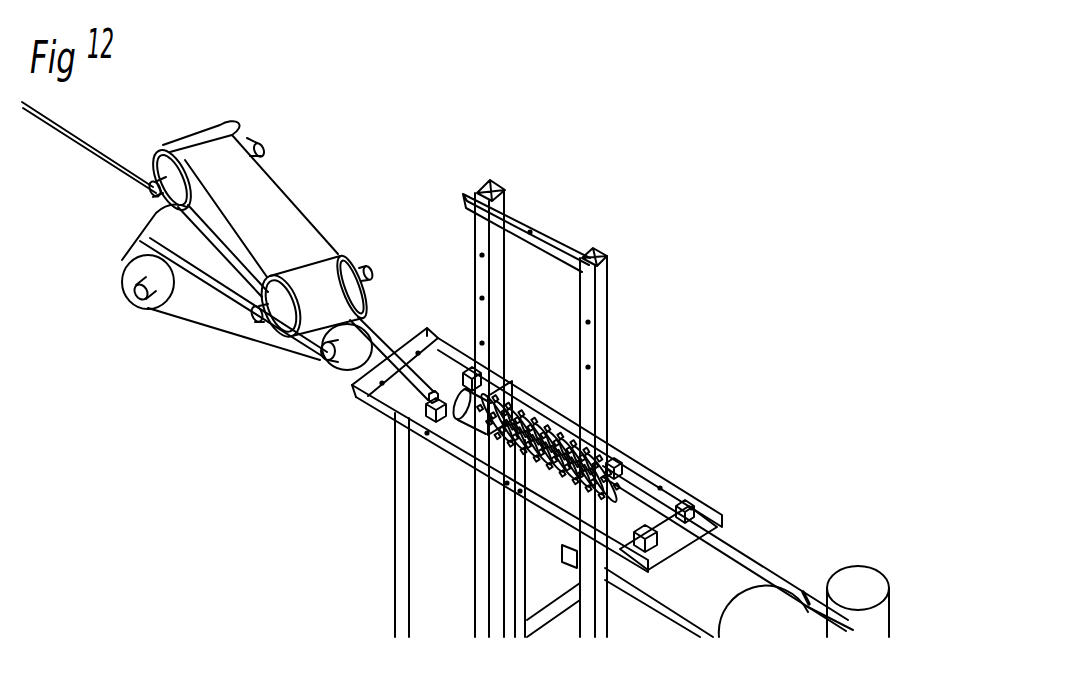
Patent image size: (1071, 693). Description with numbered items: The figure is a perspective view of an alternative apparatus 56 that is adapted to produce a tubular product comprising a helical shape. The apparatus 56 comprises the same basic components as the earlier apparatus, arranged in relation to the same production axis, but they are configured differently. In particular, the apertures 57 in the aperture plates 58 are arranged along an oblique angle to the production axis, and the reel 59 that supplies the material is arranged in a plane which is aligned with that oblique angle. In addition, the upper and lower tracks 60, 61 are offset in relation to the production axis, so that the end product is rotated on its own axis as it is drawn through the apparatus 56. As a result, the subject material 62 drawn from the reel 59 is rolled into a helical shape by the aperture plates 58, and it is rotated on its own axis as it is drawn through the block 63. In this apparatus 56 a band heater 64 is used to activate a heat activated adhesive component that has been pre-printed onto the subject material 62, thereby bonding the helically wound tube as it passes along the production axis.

The apparatus 56 is at (322, 167).
The apertures 57 is at (612, 458).
The aperture plates 58 is at (617, 466).
The reel 59 is at (790, 578).
The upper track 60 is at (320, 239).
The lower track 61 is at (248, 336).
The subject material 62 is at (740, 550).
The block 63 is at (455, 397).
The band heater 64 is at (485, 388).